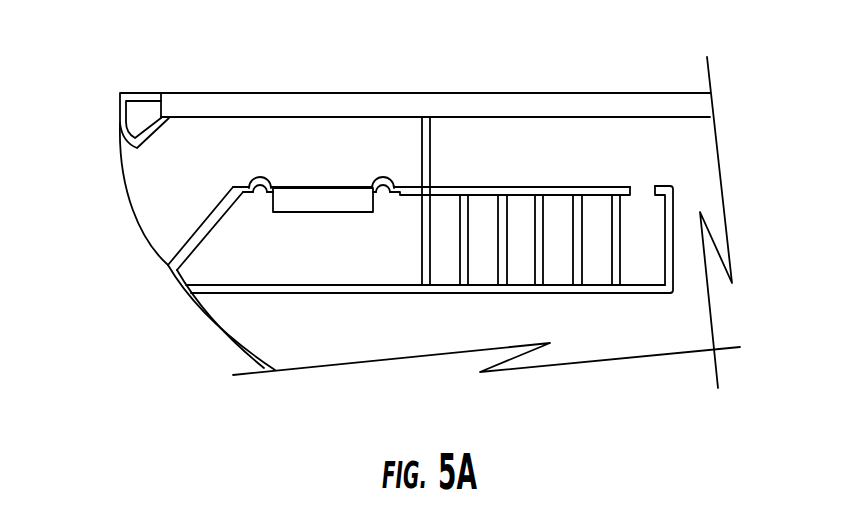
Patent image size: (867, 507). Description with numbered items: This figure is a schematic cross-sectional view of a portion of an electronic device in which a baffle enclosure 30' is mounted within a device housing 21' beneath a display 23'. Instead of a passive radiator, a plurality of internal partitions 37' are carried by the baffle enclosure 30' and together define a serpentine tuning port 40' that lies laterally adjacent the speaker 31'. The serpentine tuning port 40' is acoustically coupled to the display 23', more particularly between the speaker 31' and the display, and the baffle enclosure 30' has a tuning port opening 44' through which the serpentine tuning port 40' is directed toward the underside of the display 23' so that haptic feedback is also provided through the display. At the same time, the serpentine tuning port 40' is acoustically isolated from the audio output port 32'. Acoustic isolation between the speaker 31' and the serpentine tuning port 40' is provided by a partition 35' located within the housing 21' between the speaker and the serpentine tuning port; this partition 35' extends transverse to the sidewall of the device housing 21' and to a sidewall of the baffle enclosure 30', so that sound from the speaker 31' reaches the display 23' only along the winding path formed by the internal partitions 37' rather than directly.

The housing 21' is at (157, 225).
The display 23' is at (435, 71).
The baffle enclosure 30' is at (419, 297).
The speaker 31' is at (298, 127).
The audio output port 32' is at (389, 222).
The partition 35' is at (405, 144).
The internal partitions 37' is at (539, 211).
The serpentine tuning port 40' is at (674, 365).
The tuning port opening 44' is at (706, 215).